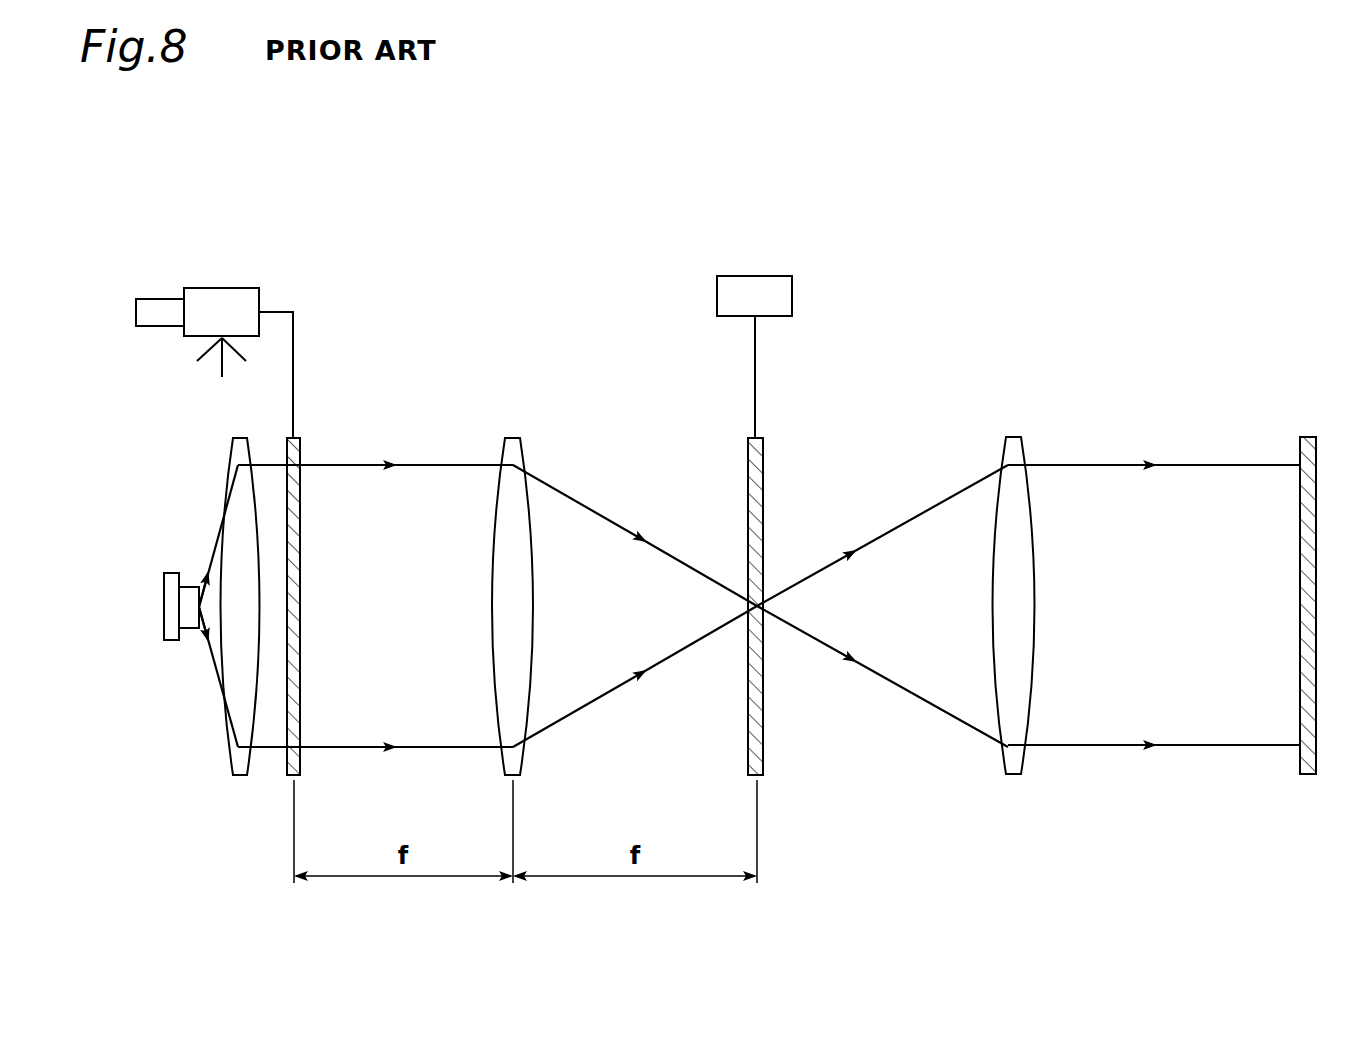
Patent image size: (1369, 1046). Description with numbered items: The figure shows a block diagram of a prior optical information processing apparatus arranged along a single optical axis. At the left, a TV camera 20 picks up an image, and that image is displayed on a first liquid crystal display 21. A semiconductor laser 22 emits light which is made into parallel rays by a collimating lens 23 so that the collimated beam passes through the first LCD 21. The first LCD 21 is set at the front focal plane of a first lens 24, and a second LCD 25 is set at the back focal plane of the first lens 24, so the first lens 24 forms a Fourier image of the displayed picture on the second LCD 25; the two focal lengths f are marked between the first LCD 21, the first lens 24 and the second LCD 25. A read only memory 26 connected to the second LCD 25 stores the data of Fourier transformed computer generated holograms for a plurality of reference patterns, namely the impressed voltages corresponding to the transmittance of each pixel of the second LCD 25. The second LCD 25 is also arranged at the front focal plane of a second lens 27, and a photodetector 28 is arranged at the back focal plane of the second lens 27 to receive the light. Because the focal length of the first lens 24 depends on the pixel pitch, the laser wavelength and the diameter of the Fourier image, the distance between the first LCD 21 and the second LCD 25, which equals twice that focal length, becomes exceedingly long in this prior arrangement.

The TV camera 20 is at (225, 288).
The first liquid crystal display 21 is at (300, 438).
The semiconductor laser 22 is at (172, 640).
The collimating lens 23 is at (238, 775).
The first lens 24 is at (513, 438).
The second LCD 25 is at (757, 438).
The read only memory 26 is at (760, 276).
The second lens 27 is at (1010, 437).
The photodetector 28 is at (1307, 437).